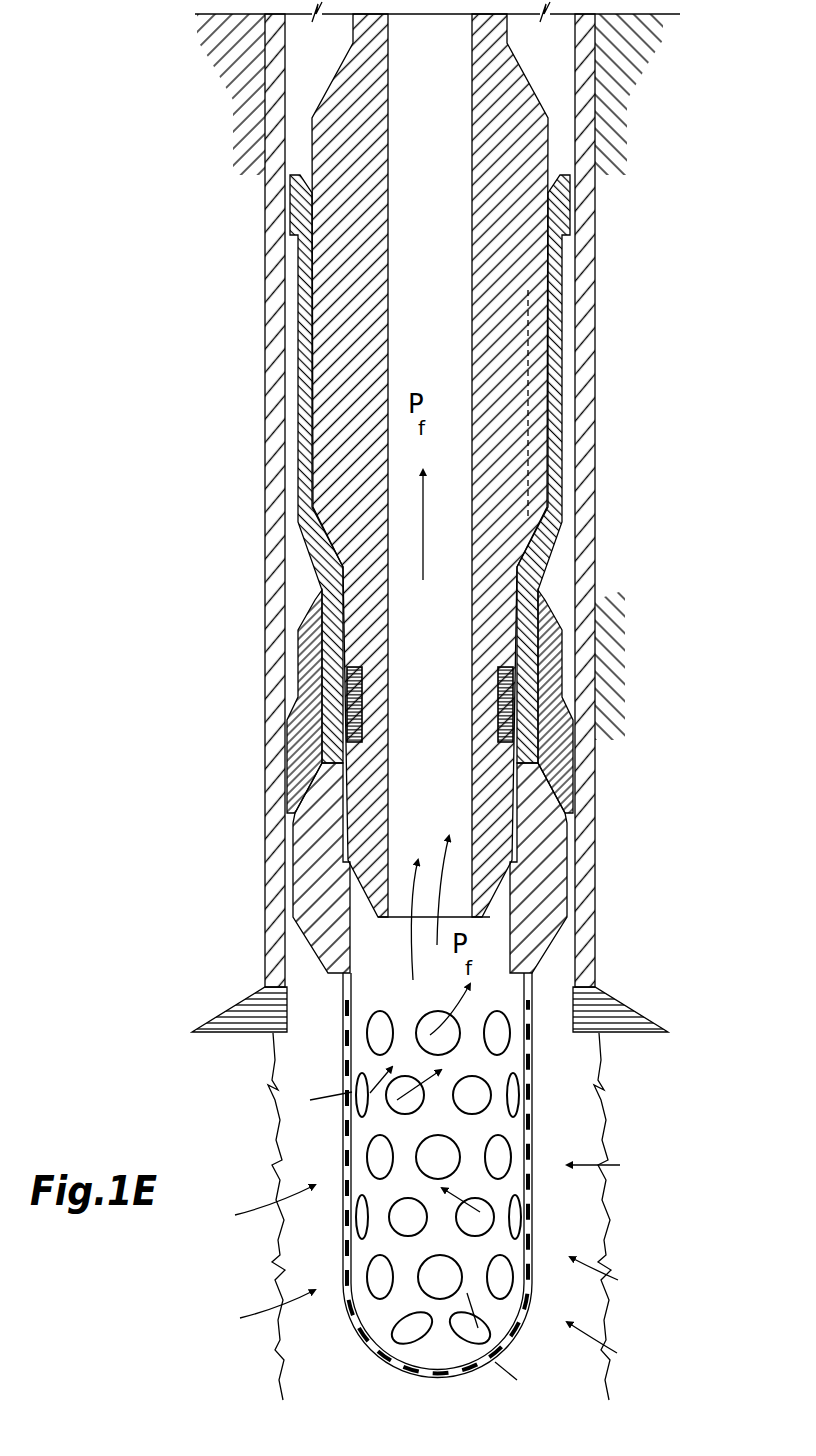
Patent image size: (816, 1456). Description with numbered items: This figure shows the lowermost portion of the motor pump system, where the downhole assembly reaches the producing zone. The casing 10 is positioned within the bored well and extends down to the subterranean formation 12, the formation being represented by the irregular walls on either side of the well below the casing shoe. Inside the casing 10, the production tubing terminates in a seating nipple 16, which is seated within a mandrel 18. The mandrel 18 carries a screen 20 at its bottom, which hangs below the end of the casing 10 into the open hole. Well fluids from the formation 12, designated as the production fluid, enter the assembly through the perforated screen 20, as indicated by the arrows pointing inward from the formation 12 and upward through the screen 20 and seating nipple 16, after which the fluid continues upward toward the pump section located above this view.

The casing 10 is at (590, 330).
The subterranean formation 12 is at (652, 1215).
The seating nipple 16 is at (520, 134).
The mandrel 18 is at (528, 595).
The screen 20 is at (530, 1095).